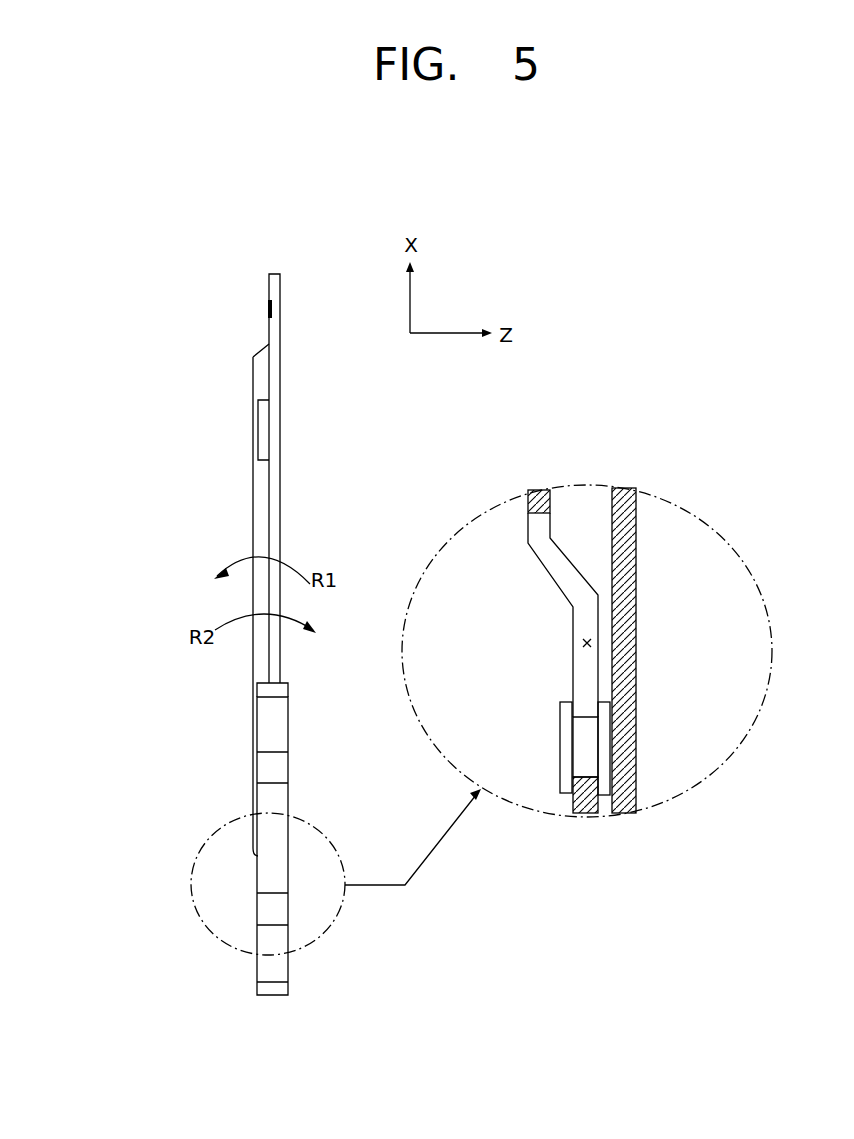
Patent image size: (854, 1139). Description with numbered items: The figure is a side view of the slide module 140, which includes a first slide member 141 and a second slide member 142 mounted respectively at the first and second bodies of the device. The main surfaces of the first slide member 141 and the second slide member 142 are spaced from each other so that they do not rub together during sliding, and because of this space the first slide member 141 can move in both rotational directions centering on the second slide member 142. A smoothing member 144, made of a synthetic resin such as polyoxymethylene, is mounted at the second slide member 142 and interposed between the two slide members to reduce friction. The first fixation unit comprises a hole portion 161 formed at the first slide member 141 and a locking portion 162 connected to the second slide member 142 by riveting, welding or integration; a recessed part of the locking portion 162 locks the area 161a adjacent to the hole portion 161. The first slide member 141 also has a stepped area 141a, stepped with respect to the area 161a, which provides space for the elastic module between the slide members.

The slide module 140 is at (144, 281).
The first slide member 141 is at (262, 378).
The stepped area 141a is at (551, 500).
The second slide member 142 is at (262, 728).
The smoothing member 144 is at (262, 686).
The hole portion 161 is at (583, 643).
The area adjacent to the hole portion 161a is at (578, 796).
The locking portion 162 is at (564, 764).